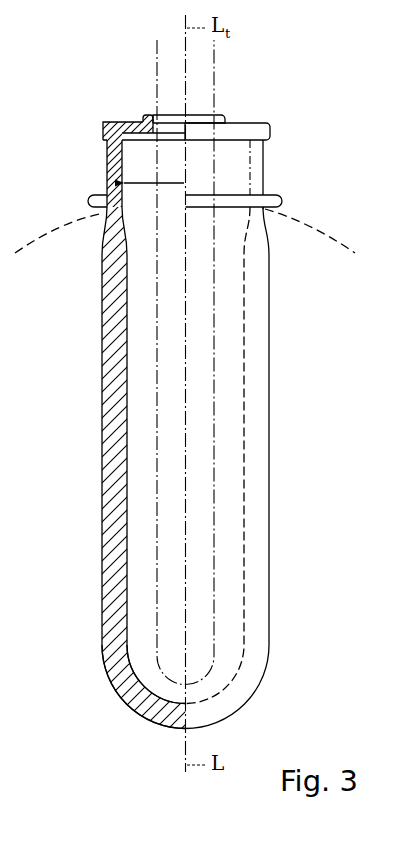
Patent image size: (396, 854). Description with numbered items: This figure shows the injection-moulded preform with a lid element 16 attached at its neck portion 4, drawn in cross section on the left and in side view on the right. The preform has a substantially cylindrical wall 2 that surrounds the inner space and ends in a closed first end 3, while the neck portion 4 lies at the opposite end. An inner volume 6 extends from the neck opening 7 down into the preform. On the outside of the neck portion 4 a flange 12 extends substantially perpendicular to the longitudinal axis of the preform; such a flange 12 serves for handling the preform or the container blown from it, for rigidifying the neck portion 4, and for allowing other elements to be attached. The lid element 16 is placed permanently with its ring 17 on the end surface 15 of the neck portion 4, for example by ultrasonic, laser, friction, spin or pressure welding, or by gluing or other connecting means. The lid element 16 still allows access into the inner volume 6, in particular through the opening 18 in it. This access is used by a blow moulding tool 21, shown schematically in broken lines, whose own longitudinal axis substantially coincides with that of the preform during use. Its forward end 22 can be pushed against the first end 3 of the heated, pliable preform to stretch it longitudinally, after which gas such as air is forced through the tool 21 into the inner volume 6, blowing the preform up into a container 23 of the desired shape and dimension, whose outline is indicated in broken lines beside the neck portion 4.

The wall 2 is at (120, 340).
The closed first end 3 is at (118, 681).
The neck portion 4 is at (107, 173).
The inner volume 6 is at (163, 412).
The neck opening 7 is at (163, 171).
The flange 12 is at (91, 201).
The end surface 15 is at (108, 121).
The lid element 16 is at (264, 121).
The ring 17 is at (132, 122).
The opening 18 is at (164, 115).
The blow moulding tool 21 is at (156, 458).
The forward end 22 is at (164, 701).
The container 23 is at (322, 232).